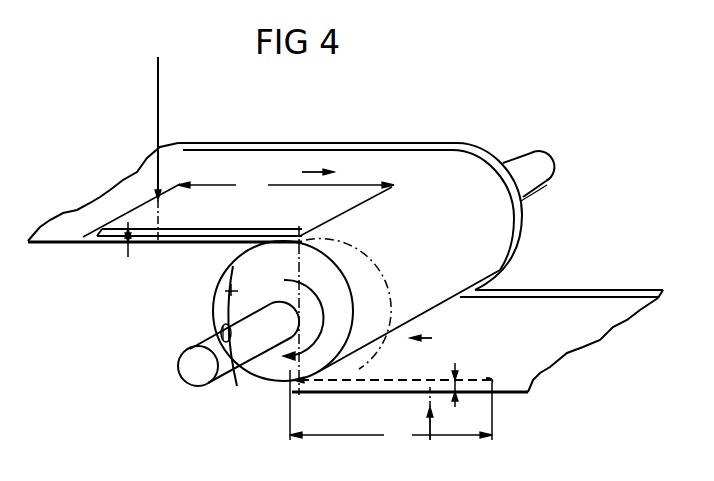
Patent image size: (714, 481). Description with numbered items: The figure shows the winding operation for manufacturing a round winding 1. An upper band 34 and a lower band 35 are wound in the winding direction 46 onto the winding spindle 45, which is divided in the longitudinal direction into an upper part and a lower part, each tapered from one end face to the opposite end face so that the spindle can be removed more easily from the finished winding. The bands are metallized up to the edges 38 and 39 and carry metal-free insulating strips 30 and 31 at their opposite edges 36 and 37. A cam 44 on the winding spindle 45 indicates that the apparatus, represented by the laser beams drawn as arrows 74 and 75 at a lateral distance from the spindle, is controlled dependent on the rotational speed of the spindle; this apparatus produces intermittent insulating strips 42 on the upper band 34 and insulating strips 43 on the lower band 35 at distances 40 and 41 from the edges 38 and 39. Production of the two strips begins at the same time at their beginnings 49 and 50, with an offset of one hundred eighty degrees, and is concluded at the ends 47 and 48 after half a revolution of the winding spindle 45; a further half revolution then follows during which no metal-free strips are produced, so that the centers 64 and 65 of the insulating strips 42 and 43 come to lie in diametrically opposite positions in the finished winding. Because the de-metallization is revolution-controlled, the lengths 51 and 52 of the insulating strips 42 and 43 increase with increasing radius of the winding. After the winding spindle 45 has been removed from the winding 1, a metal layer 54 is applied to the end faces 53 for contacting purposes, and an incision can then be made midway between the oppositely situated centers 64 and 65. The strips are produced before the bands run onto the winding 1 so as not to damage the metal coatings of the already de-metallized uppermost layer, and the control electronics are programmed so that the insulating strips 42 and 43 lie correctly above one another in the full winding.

The winding 1 is at (198, 311).
The metal-free insulating strip 30 is at (439, 142).
The metal-free insulating strip 31 is at (555, 290).
The upper band 34 is at (103, 201).
The lower band 35 is at (537, 380).
The opposite edge 36 is at (286, 142).
The opposite edge 37 is at (518, 290).
The edge 38 is at (161, 244).
The edge 39 is at (393, 394).
The distance 40 is at (125, 243).
The distance 41 is at (457, 395).
The insulating strip 42 is at (185, 229).
The insulating strip 43 is at (409, 378).
The cam 44 is at (224, 374).
The winding spindle 45 is at (188, 374).
The winding direction 46 is at (332, 170).
The end 47 is at (97, 237).
The end 48 is at (492, 383).
The beginning 49 is at (324, 234).
The beginning 50 is at (290, 386).
The length 51 is at (238, 204).
The length 52 is at (391, 417).
The end face 53 is at (241, 284).
The metal layer 54 is at (240, 291).
The center 64 is at (216, 229).
The center 65 is at (410, 372).
The laser beam 74 is at (162, 97).
The laser beam 75 is at (432, 443).